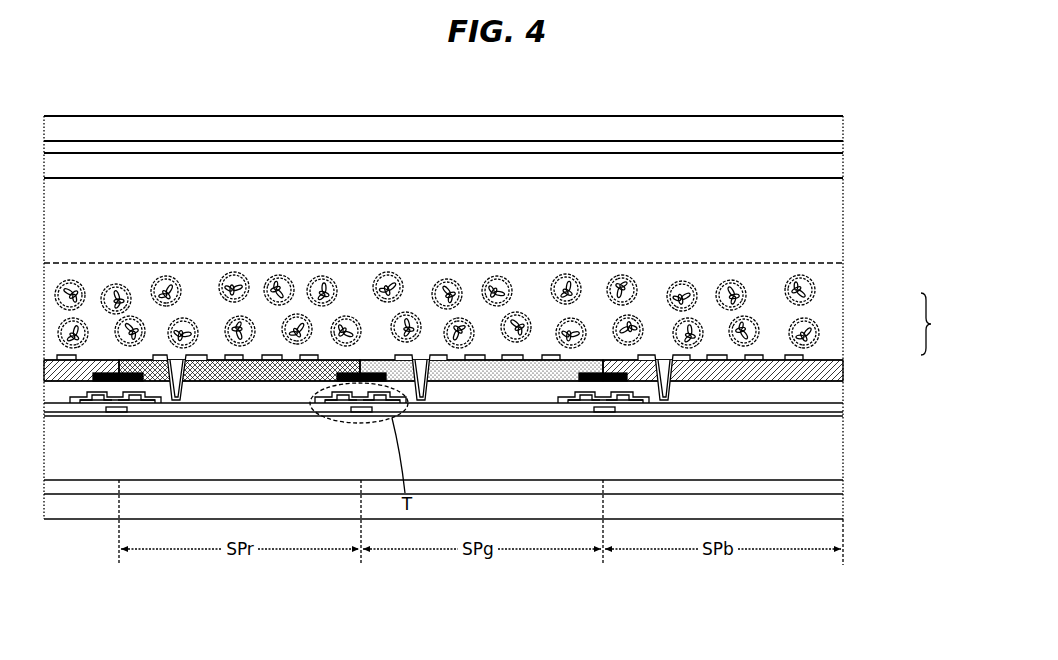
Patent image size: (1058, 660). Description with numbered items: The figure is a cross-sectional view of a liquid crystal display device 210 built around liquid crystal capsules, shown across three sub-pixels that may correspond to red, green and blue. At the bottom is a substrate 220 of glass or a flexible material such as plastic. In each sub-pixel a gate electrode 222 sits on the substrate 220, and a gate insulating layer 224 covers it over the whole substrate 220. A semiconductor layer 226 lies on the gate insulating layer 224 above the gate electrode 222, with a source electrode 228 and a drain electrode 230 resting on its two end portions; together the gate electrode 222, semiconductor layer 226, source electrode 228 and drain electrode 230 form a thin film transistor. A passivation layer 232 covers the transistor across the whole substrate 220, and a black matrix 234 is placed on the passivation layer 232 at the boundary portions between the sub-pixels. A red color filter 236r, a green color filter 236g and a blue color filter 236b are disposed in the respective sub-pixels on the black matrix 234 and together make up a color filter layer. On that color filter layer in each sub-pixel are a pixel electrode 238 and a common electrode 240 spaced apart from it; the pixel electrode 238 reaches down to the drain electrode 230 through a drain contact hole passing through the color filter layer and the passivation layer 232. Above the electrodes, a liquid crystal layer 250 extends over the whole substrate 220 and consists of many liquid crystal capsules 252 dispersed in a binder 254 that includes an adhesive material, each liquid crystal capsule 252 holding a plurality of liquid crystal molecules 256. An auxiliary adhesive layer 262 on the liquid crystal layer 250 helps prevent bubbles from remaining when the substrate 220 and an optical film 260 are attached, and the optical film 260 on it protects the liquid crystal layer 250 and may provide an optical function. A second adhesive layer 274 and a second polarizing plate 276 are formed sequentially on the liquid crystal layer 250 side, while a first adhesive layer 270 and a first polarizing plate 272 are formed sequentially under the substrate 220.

The liquid crystal display device 210 is at (462, 68).
The substrate 220 is at (806, 458).
The gate electrode 222 is at (364, 422).
The gate insulating layer 224 is at (453, 413).
The semiconductor layer 226 is at (333, 408).
The source electrode 228 is at (316, 391).
The drain electrode 230 is at (418, 403).
The passivation layer 232 is at (492, 404).
The black matrix 234 is at (128, 382).
The red color filter 236r is at (270, 378).
The green color filter 236g is at (520, 378).
The blue color filter 236b is at (702, 370).
The pixel electrode 238 is at (203, 374).
The common electrode 240 is at (238, 372).
The liquid crystal layer 250 is at (943, 324).
The liquid crystal capsule 252 is at (814, 326).
The binder 254 is at (835, 290).
The liquid crystal molecules 256 is at (808, 344).
The optical film 260 is at (835, 173).
The auxiliary adhesive layer 262 is at (835, 220).
The first adhesive layer 270 is at (835, 490).
The first polarizing plate 272 is at (835, 514).
The second adhesive layer 274 is at (835, 148).
The second polarizing plate 276 is at (835, 122).